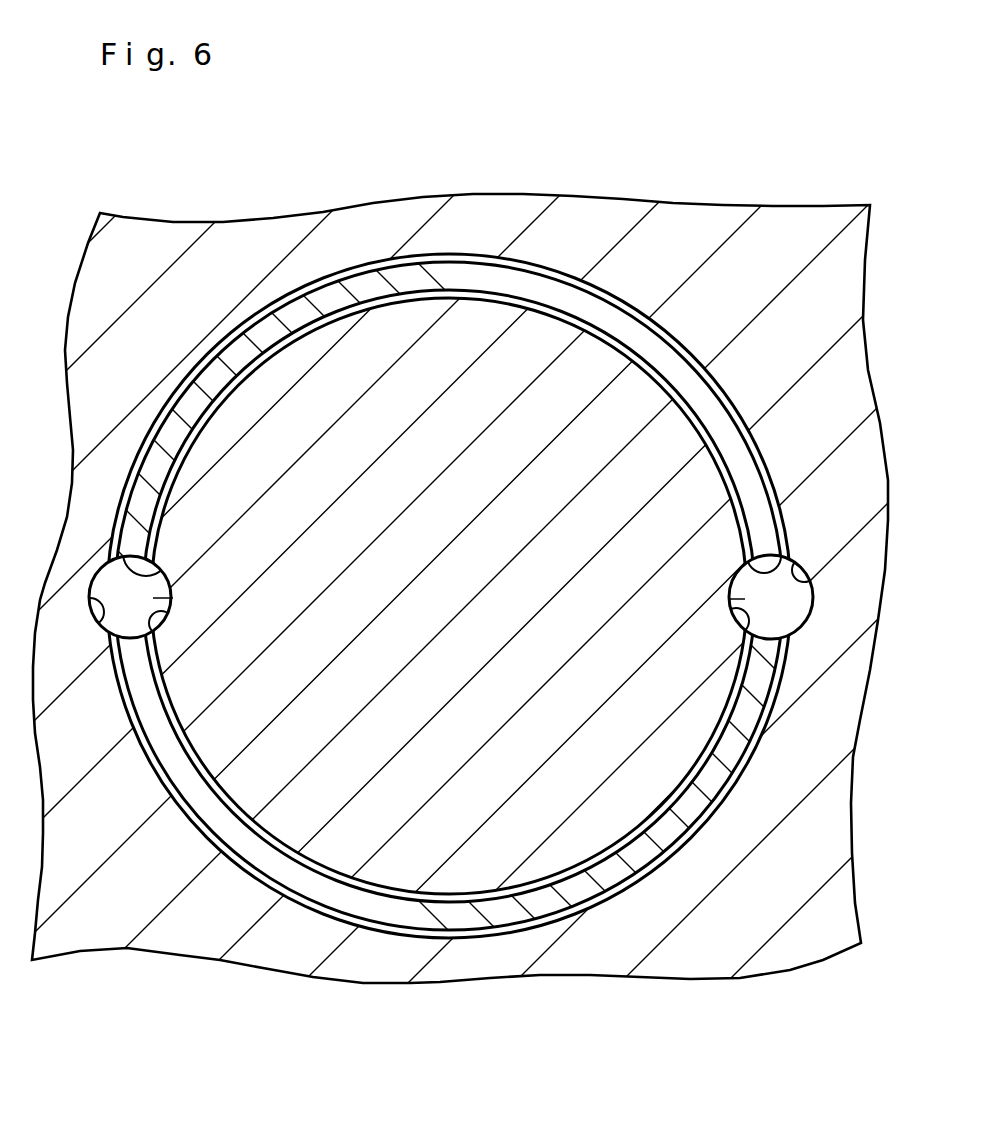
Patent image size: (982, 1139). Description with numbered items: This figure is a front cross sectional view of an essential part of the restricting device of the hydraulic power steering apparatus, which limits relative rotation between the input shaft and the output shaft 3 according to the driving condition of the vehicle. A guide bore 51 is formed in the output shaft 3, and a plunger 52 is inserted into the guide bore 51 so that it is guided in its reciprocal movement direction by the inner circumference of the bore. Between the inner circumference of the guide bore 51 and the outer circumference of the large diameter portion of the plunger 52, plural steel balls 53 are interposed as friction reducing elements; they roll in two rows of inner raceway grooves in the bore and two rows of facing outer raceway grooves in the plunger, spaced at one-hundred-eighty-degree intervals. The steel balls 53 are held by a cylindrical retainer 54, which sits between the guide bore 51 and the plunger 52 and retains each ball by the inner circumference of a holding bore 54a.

The output shaft 3 is at (503, 230).
The guide bore 51 is at (368, 263).
The plunger 52 is at (600, 360).
The steel ball 53 is at (173, 598).
The retainer 54 is at (320, 302).
The holding bore 54a is at (148, 571).